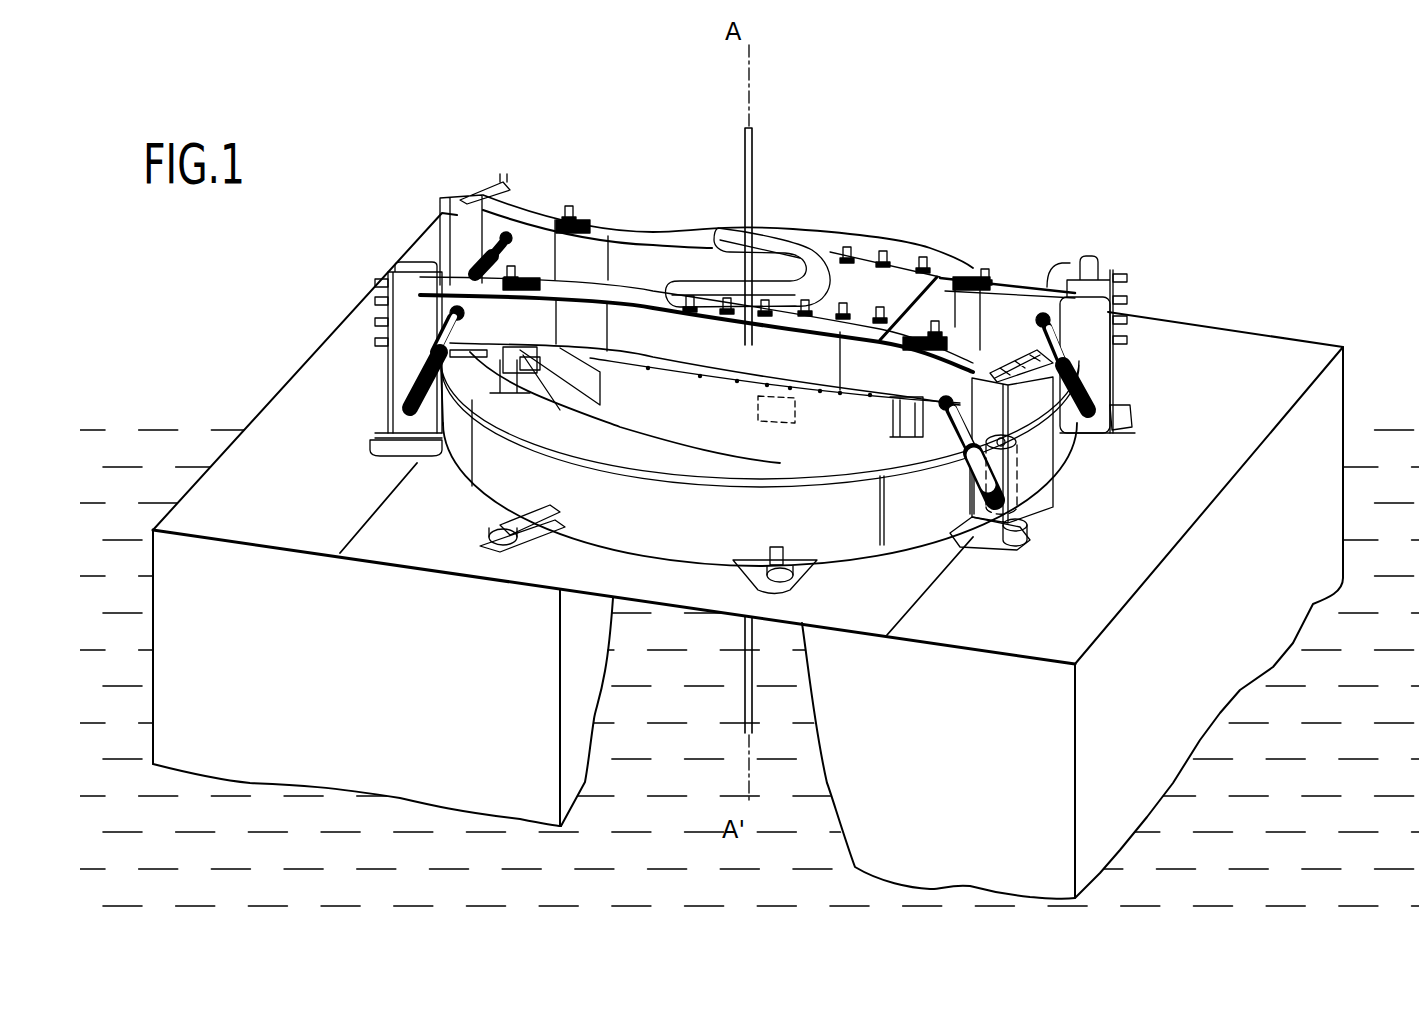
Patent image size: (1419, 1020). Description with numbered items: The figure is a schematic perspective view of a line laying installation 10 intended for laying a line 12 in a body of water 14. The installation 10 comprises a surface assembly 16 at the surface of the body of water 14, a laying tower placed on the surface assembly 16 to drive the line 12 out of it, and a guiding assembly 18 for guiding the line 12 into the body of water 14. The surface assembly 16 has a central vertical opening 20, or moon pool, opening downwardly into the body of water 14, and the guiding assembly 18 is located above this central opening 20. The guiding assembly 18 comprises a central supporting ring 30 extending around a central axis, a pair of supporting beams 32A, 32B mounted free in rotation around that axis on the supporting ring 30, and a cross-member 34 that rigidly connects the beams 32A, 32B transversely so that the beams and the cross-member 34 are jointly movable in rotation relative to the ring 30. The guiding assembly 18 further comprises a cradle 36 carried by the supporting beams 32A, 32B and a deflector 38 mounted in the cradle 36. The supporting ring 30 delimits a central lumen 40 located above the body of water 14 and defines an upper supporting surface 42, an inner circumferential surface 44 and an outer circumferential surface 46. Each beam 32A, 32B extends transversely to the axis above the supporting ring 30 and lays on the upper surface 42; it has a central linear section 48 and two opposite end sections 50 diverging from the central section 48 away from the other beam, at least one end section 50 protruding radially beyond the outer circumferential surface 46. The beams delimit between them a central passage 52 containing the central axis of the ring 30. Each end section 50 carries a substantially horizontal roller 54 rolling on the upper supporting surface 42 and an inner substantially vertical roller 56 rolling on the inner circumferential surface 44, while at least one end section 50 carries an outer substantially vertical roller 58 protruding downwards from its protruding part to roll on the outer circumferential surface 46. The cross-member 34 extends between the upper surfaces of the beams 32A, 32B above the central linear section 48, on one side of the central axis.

The installation 10 is at (1266, 176).
The line 12 is at (745, 150).
The body of water 14 is at (749, 668).
The surface assembly 16 is at (1273, 353).
The guiding assembly 18 is at (1068, 190).
The central vertical opening 20 is at (634, 699).
The central supporting ring 30 is at (352, 467).
The supporting beam 32A is at (537, 197).
The supporting beam 32B is at (364, 328).
The cross-member 34 is at (863, 280).
The cradle 36 is at (633, 434).
The deflector 38 is at (775, 393).
The central lumen 40 is at (955, 340).
The upper supporting surface 42 is at (468, 410).
The inner circumferential surface 44 is at (800, 470).
The outer circumferential surface 46 is at (917, 533).
The central linear section 48 is at (653, 305).
The end section 50 is at (432, 268).
The central passage 52 is at (952, 310).
The roller 54 is at (542, 372).
The inner roller 56 is at (516, 358).
The outer roller 58 is at (1020, 467).